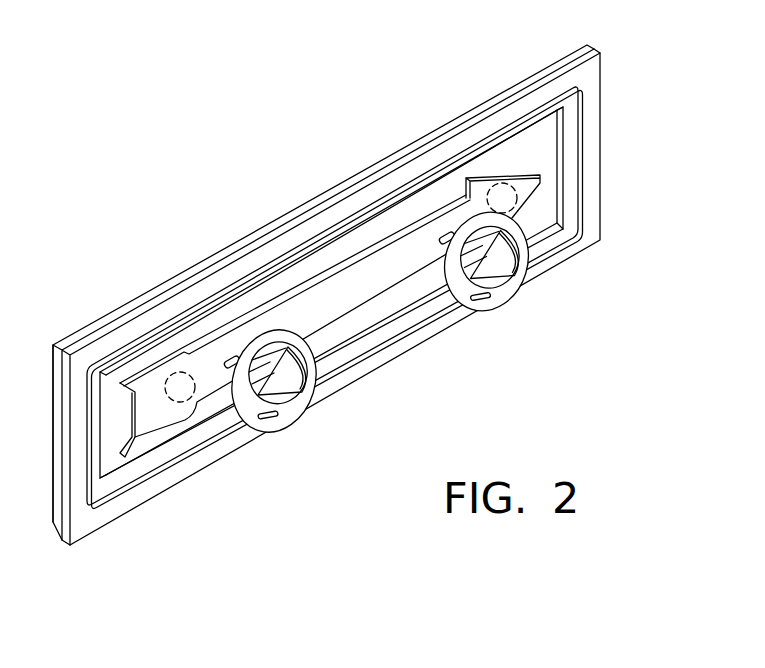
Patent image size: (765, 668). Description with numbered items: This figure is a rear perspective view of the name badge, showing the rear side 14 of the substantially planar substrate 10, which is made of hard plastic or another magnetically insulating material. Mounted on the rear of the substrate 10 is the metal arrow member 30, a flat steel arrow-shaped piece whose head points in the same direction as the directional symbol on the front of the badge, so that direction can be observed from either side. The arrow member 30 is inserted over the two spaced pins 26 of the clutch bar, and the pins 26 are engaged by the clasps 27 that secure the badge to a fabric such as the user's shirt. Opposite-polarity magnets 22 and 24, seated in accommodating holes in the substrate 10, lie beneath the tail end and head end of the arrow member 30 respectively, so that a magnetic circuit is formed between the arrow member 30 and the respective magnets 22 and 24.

The substrate 10 is at (326, 301).
The rear side 14 is at (140, 493).
The magnet 22 is at (180, 386).
The magnet 24 is at (502, 197).
The pins 26 is at (232, 356).
The clasps 27 is at (292, 405).
The arrow member 30 is at (317, 300).